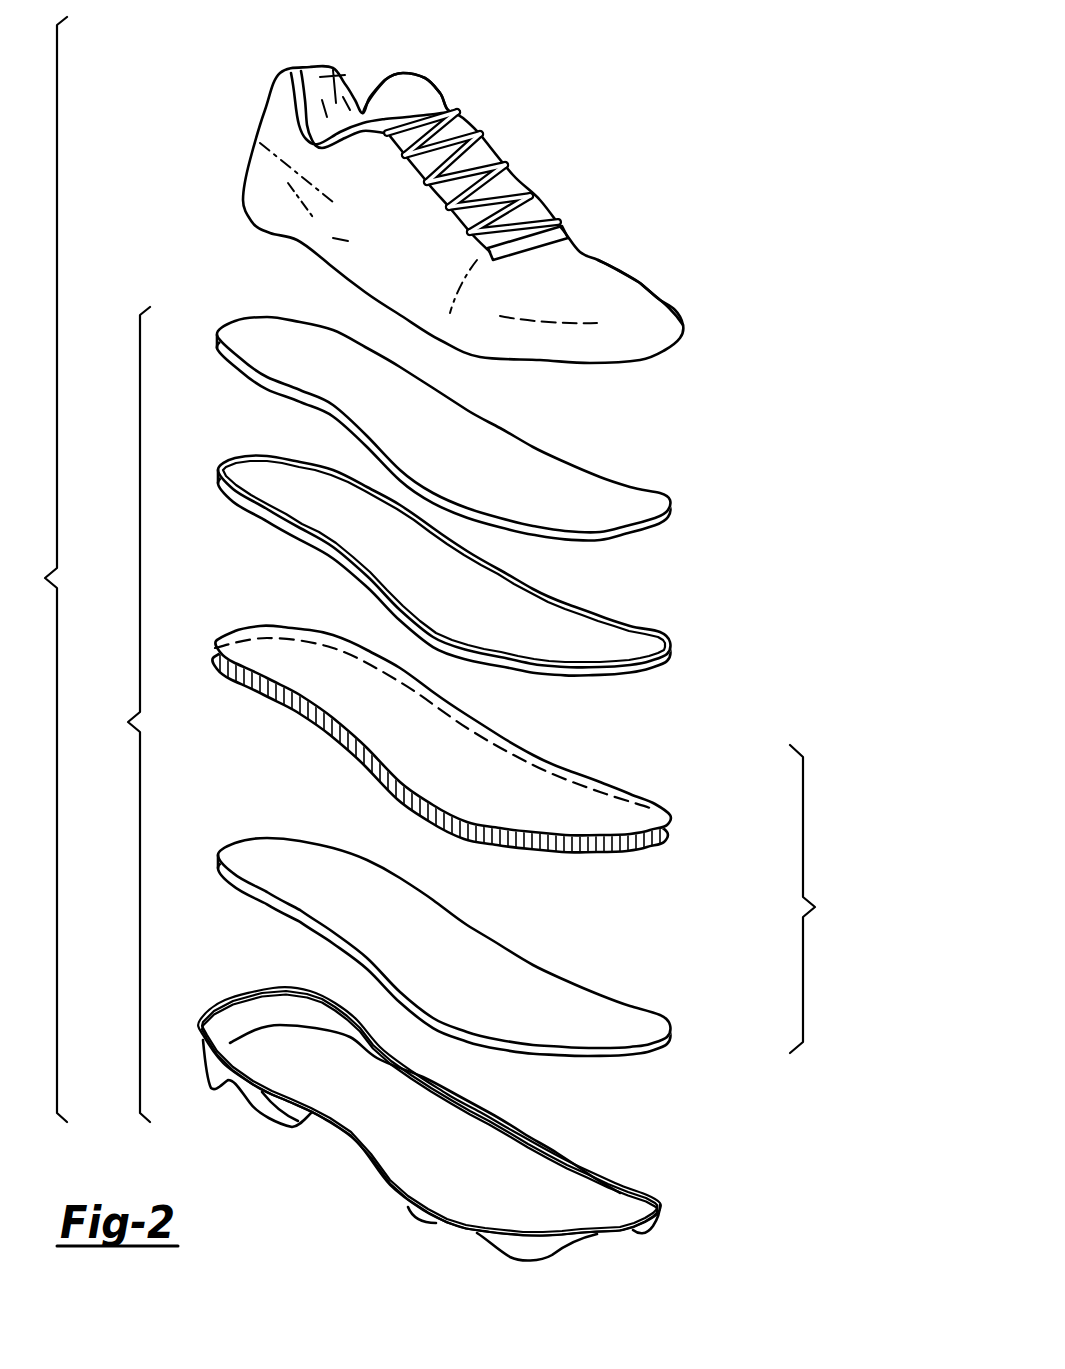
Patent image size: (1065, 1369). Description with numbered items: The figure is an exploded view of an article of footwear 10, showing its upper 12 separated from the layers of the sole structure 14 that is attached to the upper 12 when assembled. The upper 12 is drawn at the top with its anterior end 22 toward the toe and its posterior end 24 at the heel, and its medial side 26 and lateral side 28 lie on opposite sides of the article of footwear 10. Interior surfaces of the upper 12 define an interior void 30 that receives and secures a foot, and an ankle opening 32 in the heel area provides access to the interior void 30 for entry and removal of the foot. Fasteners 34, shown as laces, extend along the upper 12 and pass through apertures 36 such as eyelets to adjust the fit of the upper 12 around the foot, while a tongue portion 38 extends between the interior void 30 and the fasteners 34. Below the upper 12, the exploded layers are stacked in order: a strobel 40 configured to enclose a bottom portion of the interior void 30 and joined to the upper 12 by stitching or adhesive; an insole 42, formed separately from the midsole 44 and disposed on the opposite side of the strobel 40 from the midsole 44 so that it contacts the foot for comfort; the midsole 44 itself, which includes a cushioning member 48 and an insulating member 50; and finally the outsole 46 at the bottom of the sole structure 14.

The article of footwear 10 is at (39, 569).
The upper 12 is at (598, 260).
The sole structure 14 is at (122, 714).
The anterior end 22 is at (667, 330).
The posterior end 24 is at (238, 177).
The medial side 26 is at (637, 283).
The lateral side 28 is at (488, 306).
The interior void 30 is at (333, 68).
The ankle opening 32 is at (307, 69).
The fasteners 34 is at (507, 170).
The apertures 36 is at (427, 180).
The tongue portion 38 is at (427, 99).
The strobel 40 is at (677, 648).
The insole 42 is at (672, 498).
The midsole 44 is at (818, 899).
The outsole 46 is at (660, 1200).
The cushioning member 48 is at (675, 815).
The insulating member 50 is at (670, 1021).